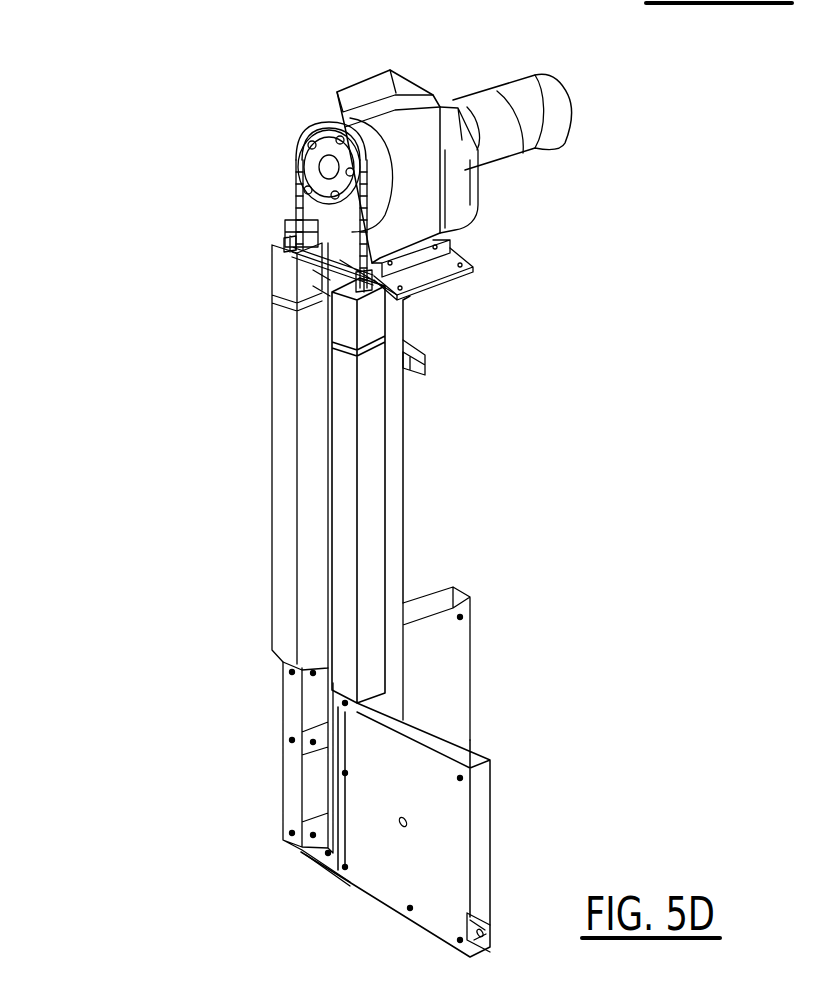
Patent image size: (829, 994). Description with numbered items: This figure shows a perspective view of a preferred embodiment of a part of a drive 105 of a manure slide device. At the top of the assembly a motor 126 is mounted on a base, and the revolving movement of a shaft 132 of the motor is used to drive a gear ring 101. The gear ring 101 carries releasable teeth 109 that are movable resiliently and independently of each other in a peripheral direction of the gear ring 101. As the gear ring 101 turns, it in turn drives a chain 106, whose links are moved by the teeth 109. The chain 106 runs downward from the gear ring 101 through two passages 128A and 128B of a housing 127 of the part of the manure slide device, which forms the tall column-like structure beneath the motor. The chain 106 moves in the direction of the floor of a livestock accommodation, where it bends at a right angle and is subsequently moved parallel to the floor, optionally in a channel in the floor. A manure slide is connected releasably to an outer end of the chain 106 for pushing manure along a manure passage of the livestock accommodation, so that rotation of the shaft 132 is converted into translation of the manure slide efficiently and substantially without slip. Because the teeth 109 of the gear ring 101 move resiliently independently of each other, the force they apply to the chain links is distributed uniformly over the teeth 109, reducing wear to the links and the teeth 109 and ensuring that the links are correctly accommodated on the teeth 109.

The drive 105 is at (205, 103).
The gear ring 101 is at (278, 153).
The chain 106 is at (288, 203).
The releasable teeth 109 is at (318, 123).
The shaft 132 is at (310, 173).
The motor 126 is at (553, 162).
The housing 127 is at (423, 505).
The passage 128A is at (283, 247).
The passage 128B is at (373, 287).